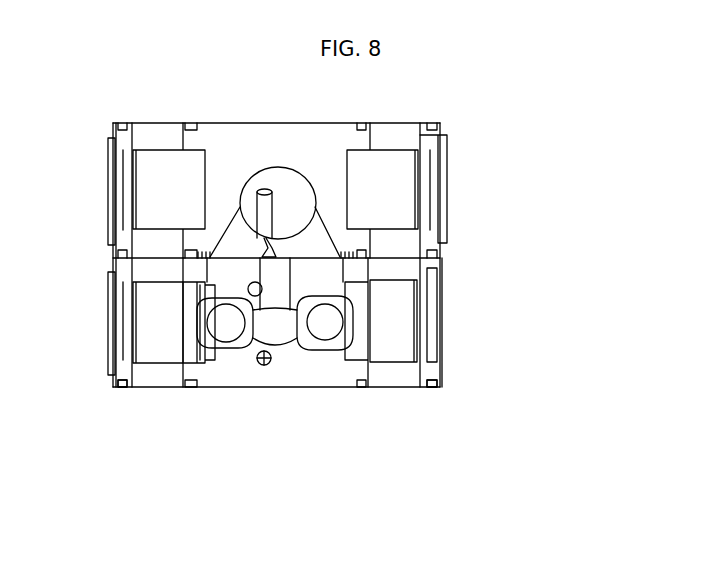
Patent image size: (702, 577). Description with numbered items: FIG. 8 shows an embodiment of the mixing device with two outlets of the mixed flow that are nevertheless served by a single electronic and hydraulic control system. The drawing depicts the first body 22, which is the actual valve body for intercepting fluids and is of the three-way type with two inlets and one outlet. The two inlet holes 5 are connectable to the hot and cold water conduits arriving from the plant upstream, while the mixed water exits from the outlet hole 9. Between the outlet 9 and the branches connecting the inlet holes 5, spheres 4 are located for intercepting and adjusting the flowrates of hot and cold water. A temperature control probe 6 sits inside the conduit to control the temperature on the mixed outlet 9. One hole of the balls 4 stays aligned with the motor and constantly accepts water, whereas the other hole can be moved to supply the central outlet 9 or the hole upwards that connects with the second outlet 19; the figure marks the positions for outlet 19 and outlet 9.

The spheres 4 is at (207, 320).
The inlet holes 5 is at (143, 375).
The temperature control probe 6 is at (270, 200).
The outlet hole 9 is at (297, 336).
The second outlet 19 is at (225, 297).
The first body 22 is at (245, 378).